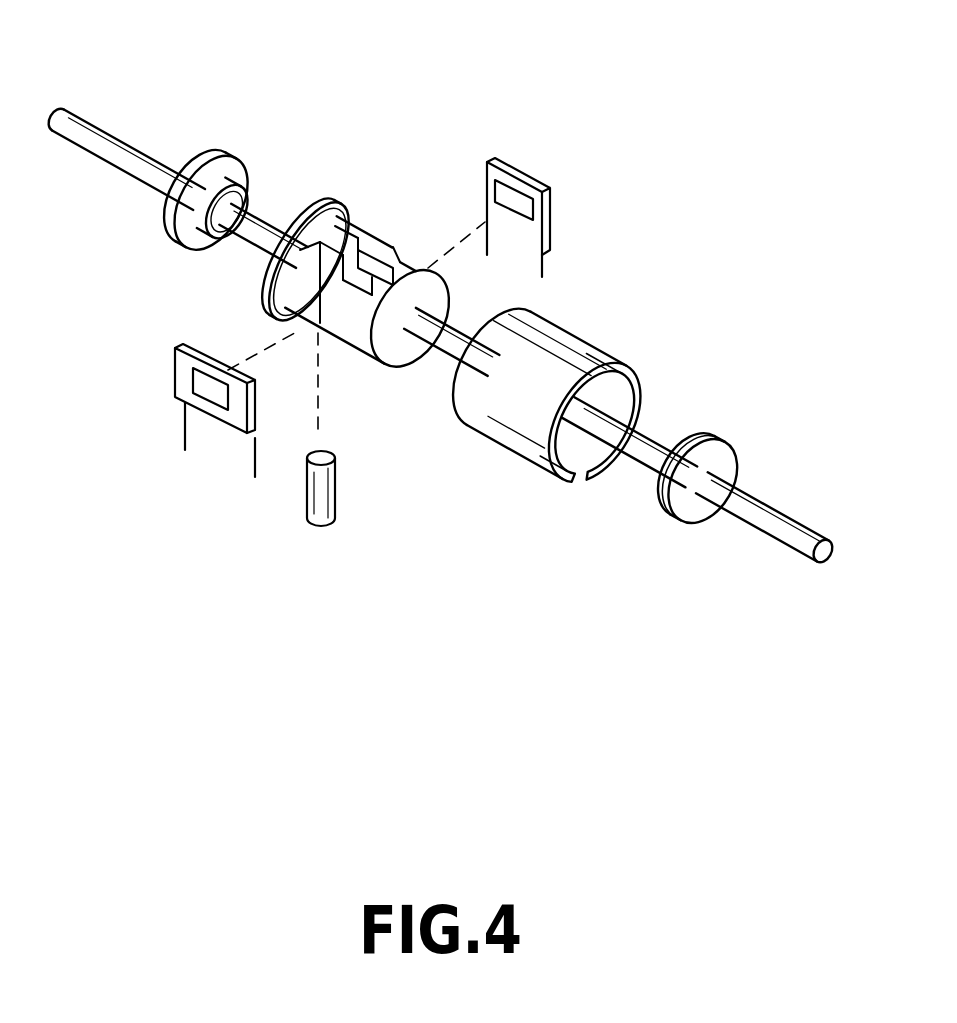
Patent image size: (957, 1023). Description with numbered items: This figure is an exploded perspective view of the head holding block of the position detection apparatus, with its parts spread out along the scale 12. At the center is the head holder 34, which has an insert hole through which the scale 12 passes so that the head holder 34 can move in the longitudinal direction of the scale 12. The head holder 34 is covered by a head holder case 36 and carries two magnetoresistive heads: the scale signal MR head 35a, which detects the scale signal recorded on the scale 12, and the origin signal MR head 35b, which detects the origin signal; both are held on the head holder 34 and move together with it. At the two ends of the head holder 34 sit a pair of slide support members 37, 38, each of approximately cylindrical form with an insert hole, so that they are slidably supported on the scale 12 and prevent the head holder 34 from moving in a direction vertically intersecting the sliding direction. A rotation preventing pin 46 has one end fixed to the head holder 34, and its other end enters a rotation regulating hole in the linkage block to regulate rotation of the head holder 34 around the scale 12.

The scale 12 is at (783, 545).
The head holder 34 is at (340, 205).
The scale signal MR head 35a is at (520, 160).
The origin signal MR head 35b is at (173, 385).
The head holder case 36 is at (582, 335).
The slide support member 37 is at (718, 440).
The slide support member 38 is at (241, 157).
The rotation preventing pin 46 is at (320, 530).